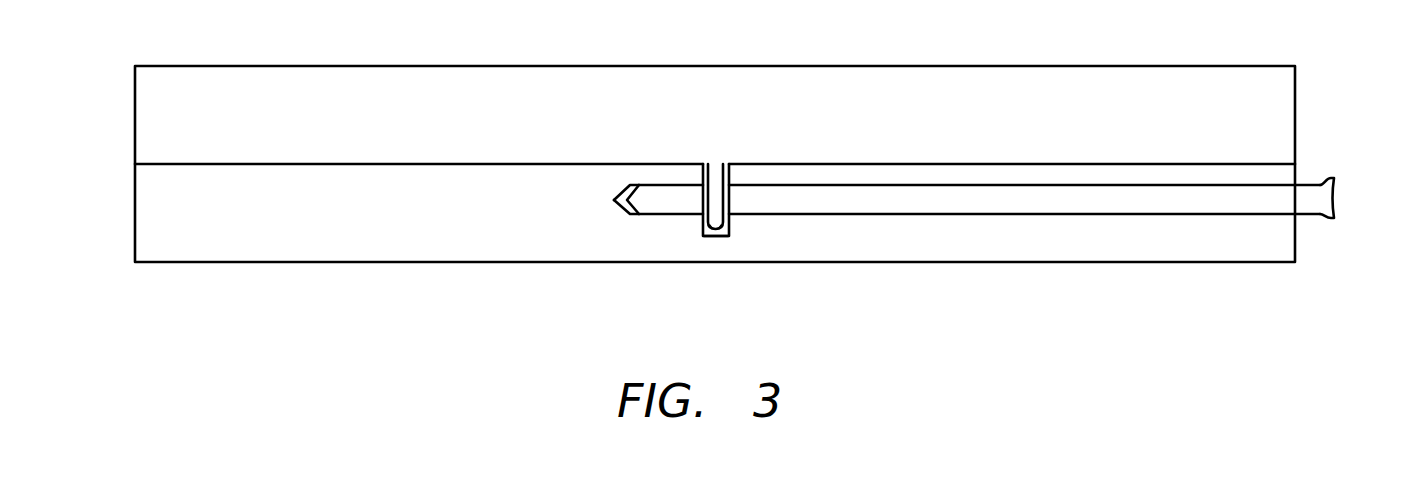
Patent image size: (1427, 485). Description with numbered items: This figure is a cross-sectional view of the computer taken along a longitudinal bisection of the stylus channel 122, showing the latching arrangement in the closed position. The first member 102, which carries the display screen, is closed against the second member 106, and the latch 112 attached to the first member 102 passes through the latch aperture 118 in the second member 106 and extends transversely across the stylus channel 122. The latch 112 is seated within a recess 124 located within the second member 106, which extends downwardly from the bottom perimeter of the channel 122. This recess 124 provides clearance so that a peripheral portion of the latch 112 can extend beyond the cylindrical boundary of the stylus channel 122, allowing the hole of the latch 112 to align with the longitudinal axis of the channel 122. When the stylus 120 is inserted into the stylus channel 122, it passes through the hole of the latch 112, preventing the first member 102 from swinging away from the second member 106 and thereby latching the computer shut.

The first member 102 is at (914, 65).
The second member 106 is at (462, 250).
The latch aperture 118 is at (722, 155).
The latch 112 is at (713, 237).
The recess 124 is at (722, 237).
The stylus channel 122 is at (1073, 214).
The stylus 120 is at (1342, 188).